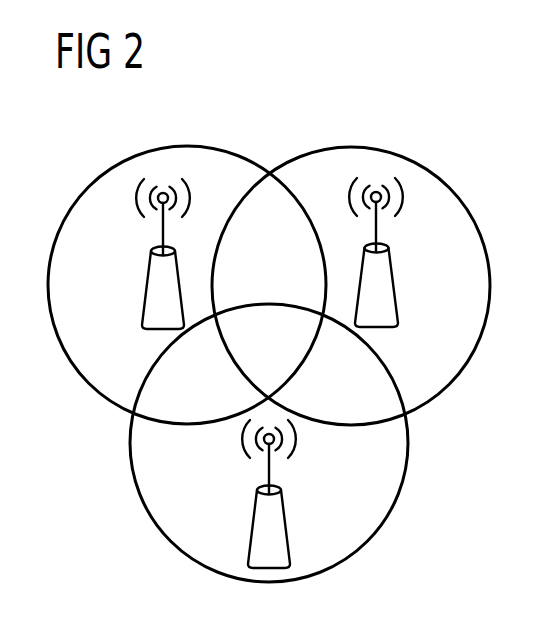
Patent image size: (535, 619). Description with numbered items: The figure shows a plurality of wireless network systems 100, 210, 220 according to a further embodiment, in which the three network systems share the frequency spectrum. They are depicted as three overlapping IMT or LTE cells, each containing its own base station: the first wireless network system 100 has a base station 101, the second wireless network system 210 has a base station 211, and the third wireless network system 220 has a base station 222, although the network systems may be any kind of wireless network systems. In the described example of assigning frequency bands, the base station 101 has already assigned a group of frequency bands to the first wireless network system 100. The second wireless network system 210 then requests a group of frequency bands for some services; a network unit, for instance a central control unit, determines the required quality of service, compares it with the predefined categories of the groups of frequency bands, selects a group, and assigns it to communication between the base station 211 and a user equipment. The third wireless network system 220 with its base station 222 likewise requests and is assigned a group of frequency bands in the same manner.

The first wireless network system 100 is at (350, 147).
The base station 101 is at (397, 283).
The second wireless network system 210 is at (408, 444).
The base station 211 is at (289, 525).
The third wireless network system 220 is at (187, 146).
The base station 222 is at (148, 284).